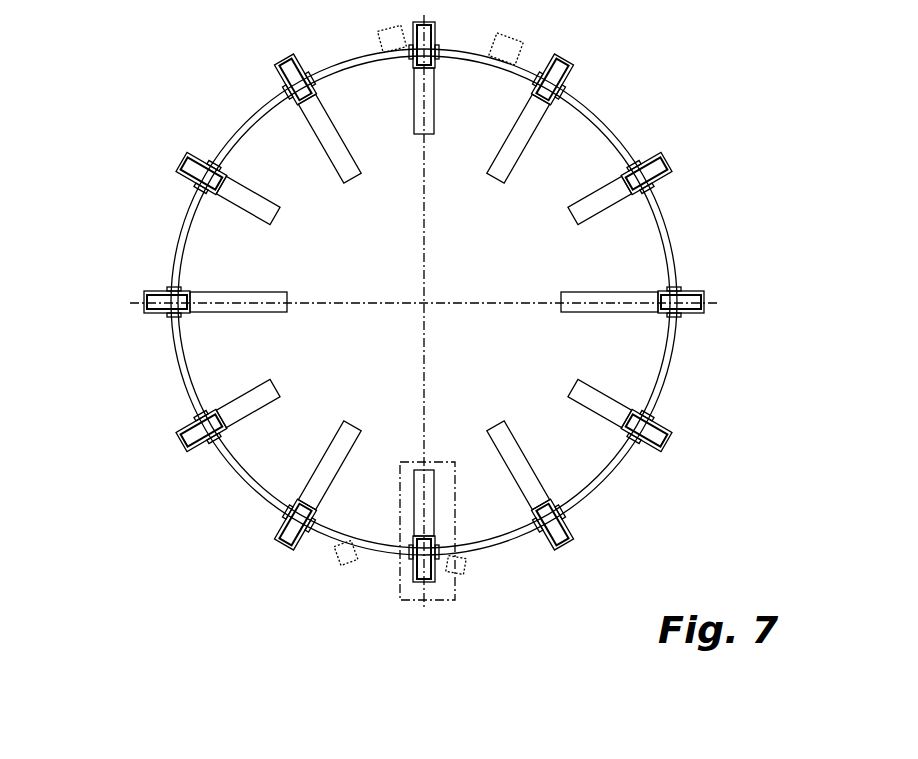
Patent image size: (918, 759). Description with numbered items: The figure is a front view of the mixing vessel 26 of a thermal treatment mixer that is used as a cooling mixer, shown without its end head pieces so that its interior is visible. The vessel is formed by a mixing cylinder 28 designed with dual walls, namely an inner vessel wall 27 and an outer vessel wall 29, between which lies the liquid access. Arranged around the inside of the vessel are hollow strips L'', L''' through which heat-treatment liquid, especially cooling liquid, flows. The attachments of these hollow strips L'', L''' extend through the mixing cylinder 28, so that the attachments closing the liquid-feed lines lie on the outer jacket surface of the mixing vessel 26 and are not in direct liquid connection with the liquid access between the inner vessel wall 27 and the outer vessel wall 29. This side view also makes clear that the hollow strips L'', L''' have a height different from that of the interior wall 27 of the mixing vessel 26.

The mixing vessel 26 is at (643, 113).
The inner vessel wall 27 is at (183, 333).
The mixing cylinder 28 is at (168, 227).
The outer vessel wall 29 is at (183, 385).
The hollow strip L'' is at (401, 139).
The hollow strip L''' is at (524, 166).